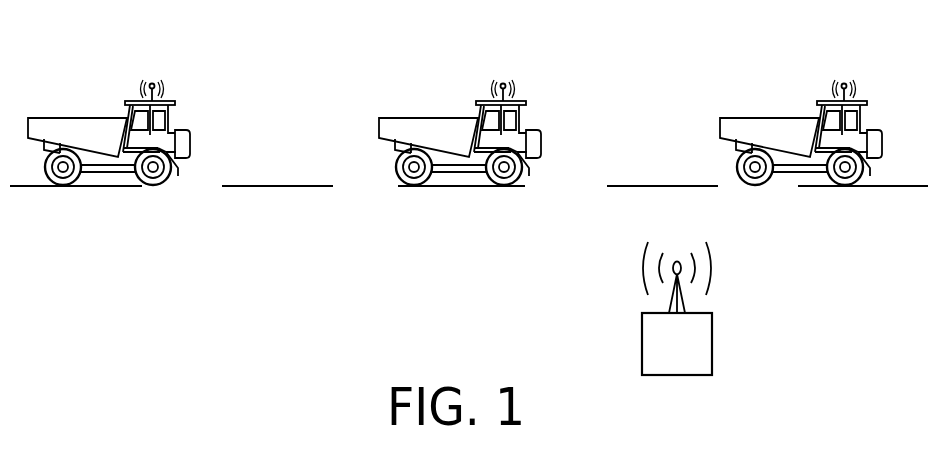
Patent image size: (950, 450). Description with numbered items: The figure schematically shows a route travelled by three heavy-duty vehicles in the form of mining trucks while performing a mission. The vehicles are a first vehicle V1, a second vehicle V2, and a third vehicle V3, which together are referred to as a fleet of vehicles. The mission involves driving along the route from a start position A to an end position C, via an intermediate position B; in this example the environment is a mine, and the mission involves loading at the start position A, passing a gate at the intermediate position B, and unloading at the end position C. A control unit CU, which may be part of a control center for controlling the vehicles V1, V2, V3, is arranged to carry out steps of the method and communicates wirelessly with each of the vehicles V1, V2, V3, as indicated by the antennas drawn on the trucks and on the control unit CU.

The first vehicle V1 is at (97, 118).
The second vehicle V2 is at (448, 118).
The third vehicle V3 is at (789, 118).
The start position A is at (108, 186).
The intermediate position B is at (458, 186).
The end position C is at (913, 186).
The control unit CU is at (642, 345).